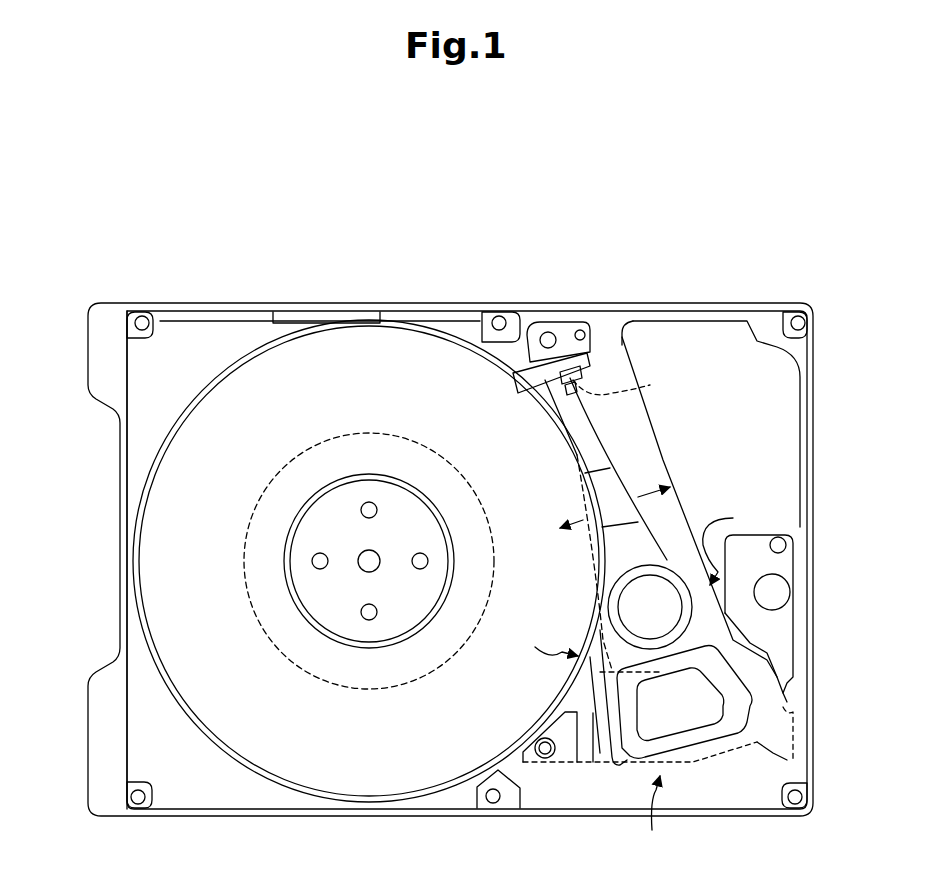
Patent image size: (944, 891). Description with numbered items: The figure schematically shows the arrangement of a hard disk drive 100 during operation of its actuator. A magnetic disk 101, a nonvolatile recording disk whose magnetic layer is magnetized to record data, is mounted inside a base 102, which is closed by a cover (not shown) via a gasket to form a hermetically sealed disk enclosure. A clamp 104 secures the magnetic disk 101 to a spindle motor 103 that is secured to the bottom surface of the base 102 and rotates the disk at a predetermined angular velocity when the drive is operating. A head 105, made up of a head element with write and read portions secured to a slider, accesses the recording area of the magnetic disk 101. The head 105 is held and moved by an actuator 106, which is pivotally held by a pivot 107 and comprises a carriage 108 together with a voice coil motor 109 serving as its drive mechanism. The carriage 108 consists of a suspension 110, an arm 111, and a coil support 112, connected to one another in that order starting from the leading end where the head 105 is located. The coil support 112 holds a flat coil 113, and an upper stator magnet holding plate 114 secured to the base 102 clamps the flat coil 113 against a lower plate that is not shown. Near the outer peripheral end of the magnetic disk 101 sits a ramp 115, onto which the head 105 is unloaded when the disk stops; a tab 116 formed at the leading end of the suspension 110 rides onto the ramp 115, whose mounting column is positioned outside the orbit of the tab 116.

The hard disk drive 100 is at (738, 284).
The magnetic disk 101 is at (345, 778).
The base 102 is at (152, 760).
The spindle motor 103 is at (272, 545).
The clamp 104 is at (388, 630).
The head 105 is at (640, 386).
The actuator 106 is at (760, 553).
The pivot 107 is at (613, 607).
The carriage 108 is at (775, 529).
The voice coil motor 109 is at (661, 816).
The suspension 110 is at (582, 420).
The arm 111 is at (650, 510).
The coil support 112 is at (535, 647).
The flat coil 113 is at (708, 740).
The upper stator magnet holding plate 114 is at (778, 652).
The ramp 115 is at (540, 322).
The tab 116 is at (553, 392).